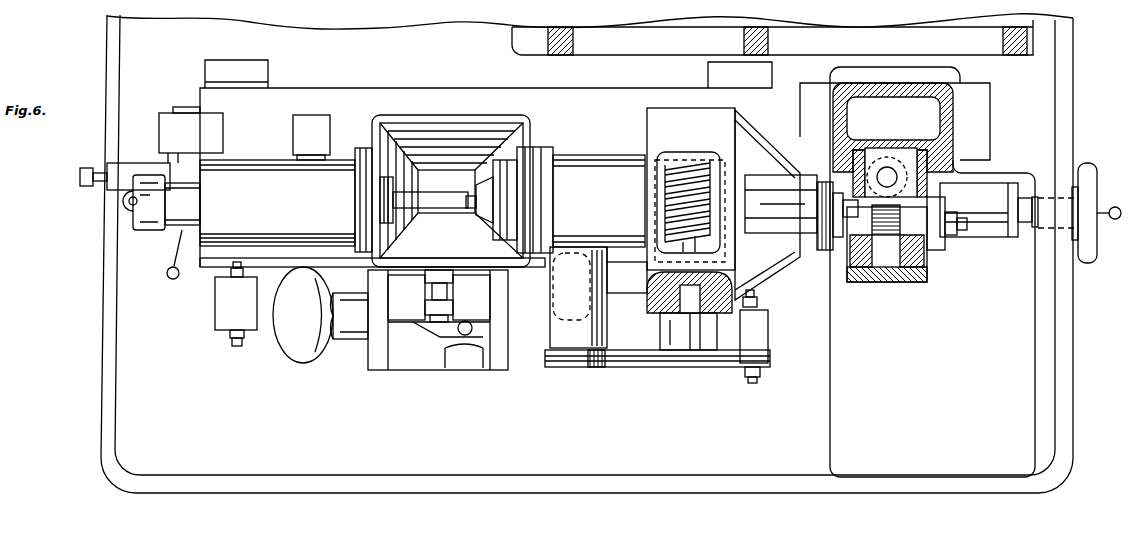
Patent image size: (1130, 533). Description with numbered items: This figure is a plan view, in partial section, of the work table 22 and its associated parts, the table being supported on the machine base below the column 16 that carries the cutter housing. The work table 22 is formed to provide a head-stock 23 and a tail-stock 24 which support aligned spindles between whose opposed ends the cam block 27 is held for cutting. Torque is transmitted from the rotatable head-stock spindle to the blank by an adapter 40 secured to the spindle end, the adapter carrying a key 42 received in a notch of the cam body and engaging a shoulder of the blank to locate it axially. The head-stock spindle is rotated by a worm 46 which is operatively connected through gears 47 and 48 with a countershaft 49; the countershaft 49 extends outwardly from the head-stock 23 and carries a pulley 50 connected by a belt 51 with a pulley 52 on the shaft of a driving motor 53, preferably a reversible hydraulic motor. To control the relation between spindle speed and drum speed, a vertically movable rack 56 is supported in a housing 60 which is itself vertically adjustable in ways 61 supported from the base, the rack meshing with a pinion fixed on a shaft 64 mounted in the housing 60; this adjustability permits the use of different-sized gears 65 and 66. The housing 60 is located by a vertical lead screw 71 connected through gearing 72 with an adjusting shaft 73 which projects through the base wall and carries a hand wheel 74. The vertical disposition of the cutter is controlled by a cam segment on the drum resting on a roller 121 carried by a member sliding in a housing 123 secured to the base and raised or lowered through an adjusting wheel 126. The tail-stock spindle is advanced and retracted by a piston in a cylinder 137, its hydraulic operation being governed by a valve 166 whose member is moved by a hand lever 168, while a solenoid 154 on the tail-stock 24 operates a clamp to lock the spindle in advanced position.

The column 16 is at (545, 35).
The work table 22 is at (283, 102).
The head-stock 23 is at (599, 201).
The tail-stock 24 is at (268, 200).
The cam block 27 is at (450, 212).
The adapter 40 is at (522, 150).
The key 42 is at (467, 201).
The worm 46 is at (672, 176).
The gear 47 is at (655, 298).
The gear 48 is at (745, 305).
The countershaft 49 is at (690, 318).
The pulley 50 is at (746, 373).
The belt 51 is at (622, 368).
The pulley 52 is at (580, 370).
The driving motor 53 is at (555, 318).
The rack 56 is at (890, 270).
The housing 60 is at (932, 252).
The ways 61 is at (843, 157).
The shaft 64 is at (848, 255).
The gear 65 is at (820, 250).
The gear 66 is at (822, 181).
The lead screw 71 is at (887, 167).
The gearing 72 is at (905, 160).
The adjusting shaft 73 is at (1030, 222).
The hand wheel 74 is at (1095, 263).
The roller 121 is at (432, 292).
The housing 123 is at (334, 336).
The adjusting wheel 126 is at (300, 355).
The cylinder 137 is at (180, 212).
The solenoid 154 is at (320, 128).
The valve 166 is at (160, 162).
The hand lever 168 is at (167, 277).